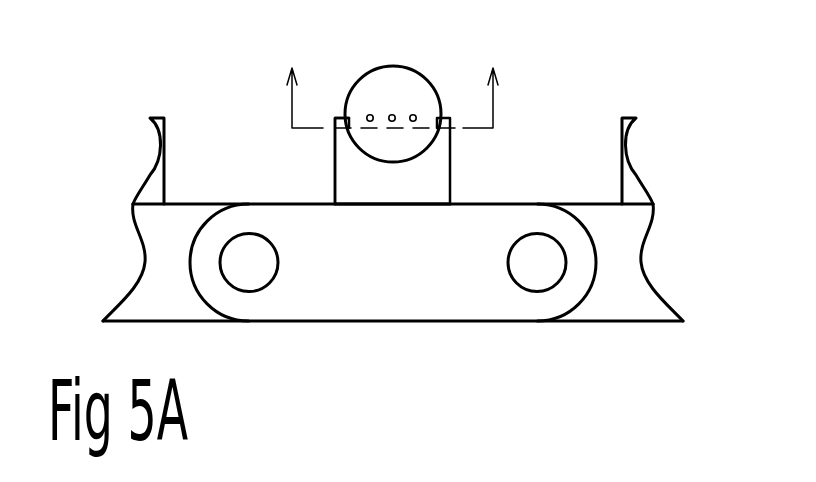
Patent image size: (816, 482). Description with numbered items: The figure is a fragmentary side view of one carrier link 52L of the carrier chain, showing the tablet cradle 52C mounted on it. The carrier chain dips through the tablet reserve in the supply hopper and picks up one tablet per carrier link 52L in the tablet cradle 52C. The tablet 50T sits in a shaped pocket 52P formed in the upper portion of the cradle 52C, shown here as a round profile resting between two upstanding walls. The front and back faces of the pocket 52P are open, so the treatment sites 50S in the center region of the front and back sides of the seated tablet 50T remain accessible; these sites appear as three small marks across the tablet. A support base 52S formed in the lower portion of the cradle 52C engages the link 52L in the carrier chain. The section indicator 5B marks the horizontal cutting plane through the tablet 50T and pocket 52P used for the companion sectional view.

The treatment sites 50S is at (368, 112).
The tablet 50T is at (418, 85).
The shaped pocket 52P is at (363, 150).
The tablet cradle 52C is at (442, 163).
The support base 52S is at (398, 195).
The carrier link 52L is at (398, 328).
The section line 5B is at (394, 82).